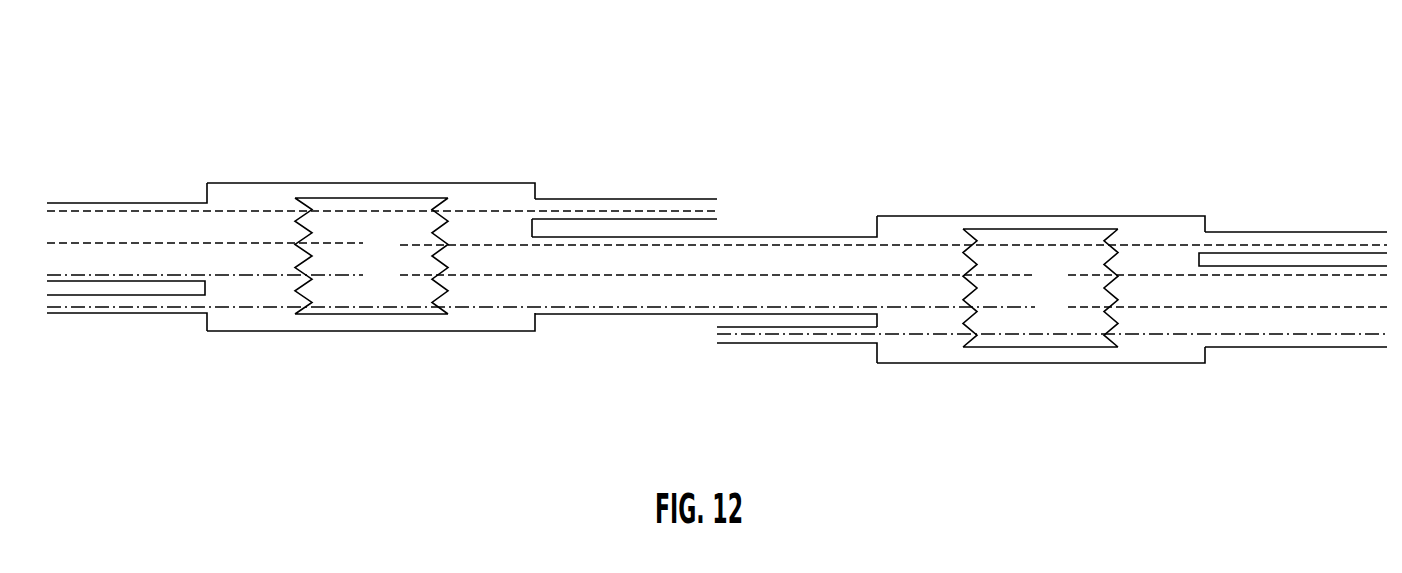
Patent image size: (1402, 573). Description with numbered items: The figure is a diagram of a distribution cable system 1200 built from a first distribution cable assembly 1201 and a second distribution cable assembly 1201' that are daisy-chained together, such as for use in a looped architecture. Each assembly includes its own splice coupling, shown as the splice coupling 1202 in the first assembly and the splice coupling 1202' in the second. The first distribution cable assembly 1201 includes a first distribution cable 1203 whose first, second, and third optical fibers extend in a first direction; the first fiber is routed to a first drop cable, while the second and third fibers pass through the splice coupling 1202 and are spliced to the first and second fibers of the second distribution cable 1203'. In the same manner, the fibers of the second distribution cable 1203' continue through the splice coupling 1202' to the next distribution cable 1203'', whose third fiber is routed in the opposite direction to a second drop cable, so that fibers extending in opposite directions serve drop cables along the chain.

The distribution cable system 1200 is at (1036, 78).
The first distribution cable assembly 1201 is at (371, 212).
The second distribution cable assembly 1201' is at (1041, 250).
The splice coupling 1202 is at (371, 290).
The splice coupling 1202' is at (1040, 331).
The first distribution cable 1203 is at (157, 218).
The second distribution cable 1203' is at (704, 243).
The distribution cable 1203'' is at (1296, 324).